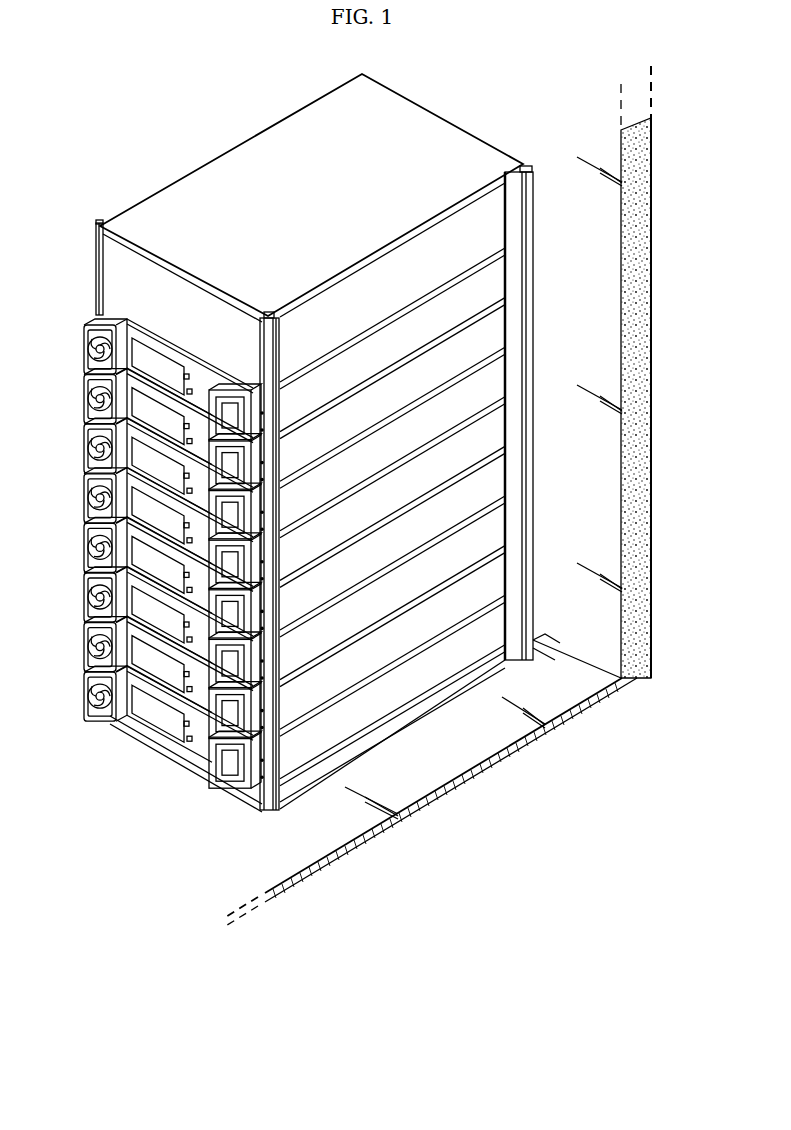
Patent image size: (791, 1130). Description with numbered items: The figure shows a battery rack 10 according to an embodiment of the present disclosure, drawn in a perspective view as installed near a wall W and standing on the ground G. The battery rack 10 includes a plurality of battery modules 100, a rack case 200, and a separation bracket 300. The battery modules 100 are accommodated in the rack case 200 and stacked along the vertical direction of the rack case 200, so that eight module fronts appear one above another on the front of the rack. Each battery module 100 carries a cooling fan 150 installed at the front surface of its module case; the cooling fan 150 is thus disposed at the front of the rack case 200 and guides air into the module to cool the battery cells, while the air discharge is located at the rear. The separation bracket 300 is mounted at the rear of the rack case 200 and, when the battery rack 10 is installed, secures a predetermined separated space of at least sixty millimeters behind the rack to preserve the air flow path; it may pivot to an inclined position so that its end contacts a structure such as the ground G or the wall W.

The battery rack 10 is at (308, 470).
The battery module 100 is at (144, 562).
The cooling fan 150 is at (90, 692).
The rack case 200 is at (278, 790).
The separation bracket 300 is at (561, 668).
The wall W is at (598, 350).
The ground G is at (452, 752).